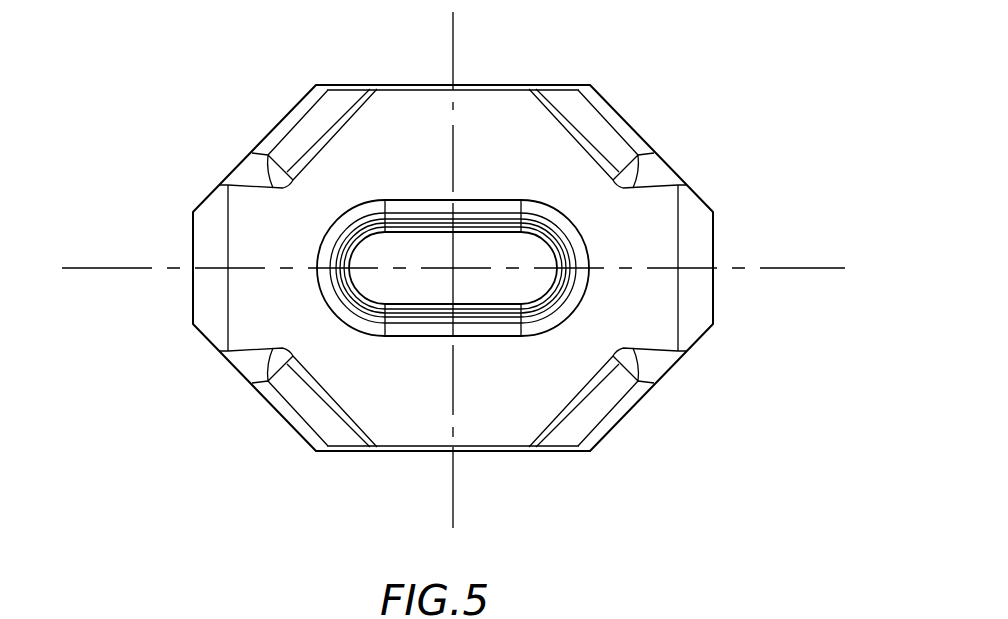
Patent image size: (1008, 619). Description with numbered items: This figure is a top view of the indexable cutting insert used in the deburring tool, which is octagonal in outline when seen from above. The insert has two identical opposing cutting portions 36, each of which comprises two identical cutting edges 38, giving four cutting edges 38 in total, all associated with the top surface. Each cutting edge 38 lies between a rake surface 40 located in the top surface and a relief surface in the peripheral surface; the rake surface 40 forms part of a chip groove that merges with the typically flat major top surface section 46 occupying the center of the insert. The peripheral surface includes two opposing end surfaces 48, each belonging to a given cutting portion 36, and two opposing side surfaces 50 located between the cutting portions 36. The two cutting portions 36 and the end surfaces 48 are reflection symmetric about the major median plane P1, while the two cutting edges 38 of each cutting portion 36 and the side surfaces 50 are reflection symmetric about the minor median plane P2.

The cutting portion 36 is at (710, 122).
The cutting edge 38 is at (298, 103).
The rake surface 40 is at (607, 427).
The major top surface section 46 is at (413, 150).
The end surface 48 is at (490, 90).
The side surface 50 is at (695, 244).
The major median plane P1 is at (118, 268).
The minor median plane P2 is at (455, 53).